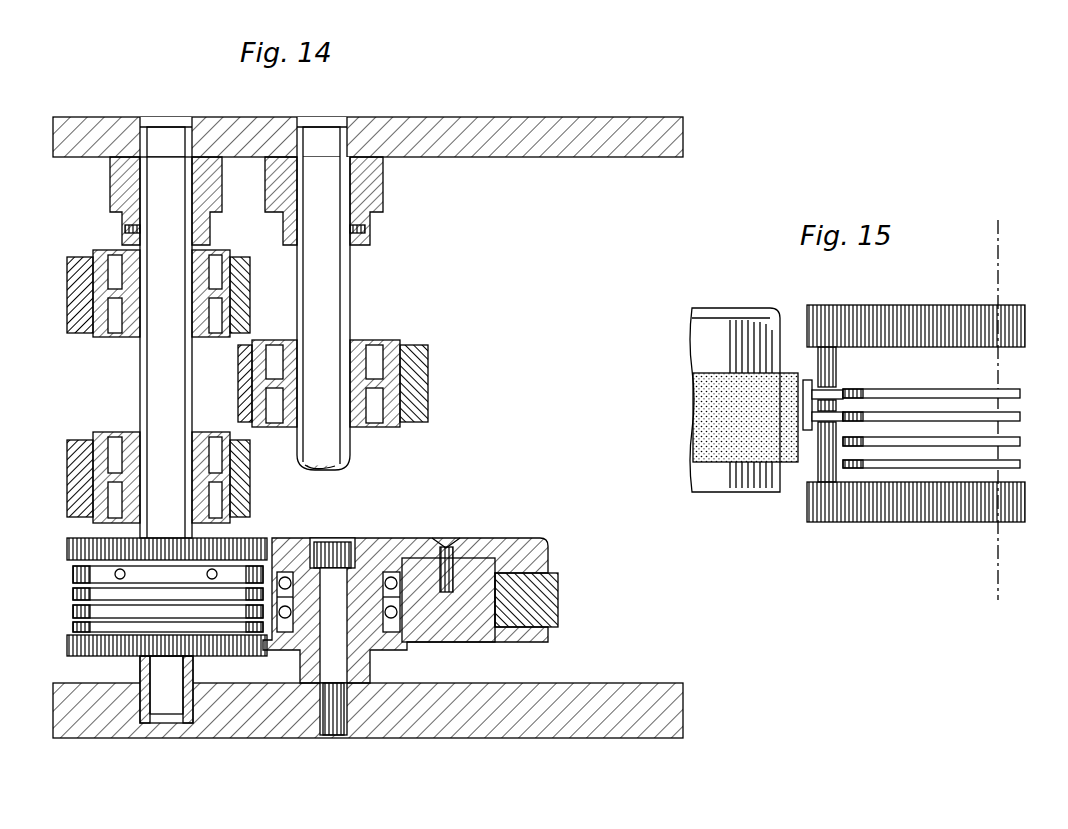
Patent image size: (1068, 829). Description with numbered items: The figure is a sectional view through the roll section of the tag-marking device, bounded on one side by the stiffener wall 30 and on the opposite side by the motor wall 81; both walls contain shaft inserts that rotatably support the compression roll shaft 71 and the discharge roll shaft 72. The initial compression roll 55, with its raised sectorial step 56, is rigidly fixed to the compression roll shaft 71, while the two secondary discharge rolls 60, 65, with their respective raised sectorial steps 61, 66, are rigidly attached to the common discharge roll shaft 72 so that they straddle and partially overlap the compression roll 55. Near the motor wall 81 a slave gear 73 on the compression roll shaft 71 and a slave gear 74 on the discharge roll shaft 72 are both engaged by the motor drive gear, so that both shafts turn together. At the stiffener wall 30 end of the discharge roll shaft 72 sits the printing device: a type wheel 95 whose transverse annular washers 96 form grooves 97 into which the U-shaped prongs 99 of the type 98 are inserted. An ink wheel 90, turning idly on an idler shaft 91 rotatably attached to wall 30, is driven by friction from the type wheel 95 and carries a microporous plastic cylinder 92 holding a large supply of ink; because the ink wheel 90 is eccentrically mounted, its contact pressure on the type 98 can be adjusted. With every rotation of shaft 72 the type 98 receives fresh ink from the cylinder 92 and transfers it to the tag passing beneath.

In FIG. 14, the stiffener wall 30 is at (490, 700).
In FIG. 14, the initial compression roll 55 is at (378, 415).
In FIG. 14, the raised sectorial step 56 is at (428, 400).
In FIG. 14, the secondary discharge roll 60 is at (97, 432).
In FIG. 14, the raised sectorial step 61 is at (68, 478).
In FIG. 14, the secondary discharge roll 65 is at (113, 332).
In FIG. 14, the raised sectorial step 66 is at (68, 293).
In FIG. 14, the compression roll shaft 71 is at (322, 302).
In FIG. 14, the discharge roll shaft 72 is at (160, 376).
In FIG. 14, the slave gear 73 is at (380, 186).
In FIG. 14, the slave gear 74 is at (112, 187).
In FIG. 14, the motor wall 81 is at (516, 140).
In FIG. 14, the ink wheel 90 is at (540, 553).
In FIG. 15, the ink wheel 90 is at (722, 346).
In FIG. 14, the idler shaft 91 is at (338, 538).
In FIG. 14, the microporous plastic cylinder 92 is at (558, 598).
In FIG. 15, the microporous plastic cylinder 92 is at (722, 404).
In FIG. 14, the type wheel 95 is at (78, 572).
In FIG. 15, the type wheel 95 is at (1000, 367).
In FIG. 14, the transverse annular washers 96 is at (78, 598).
In FIG. 15, the transverse annular washers 96 is at (1005, 476).
In FIG. 14, the grooves 97 is at (78, 624).
In FIG. 15, the grooves 97 is at (1005, 417).
In FIG. 15, the type 98 is at (822, 384).
In FIG. 15, the U-shaped prongs 99 is at (838, 412).